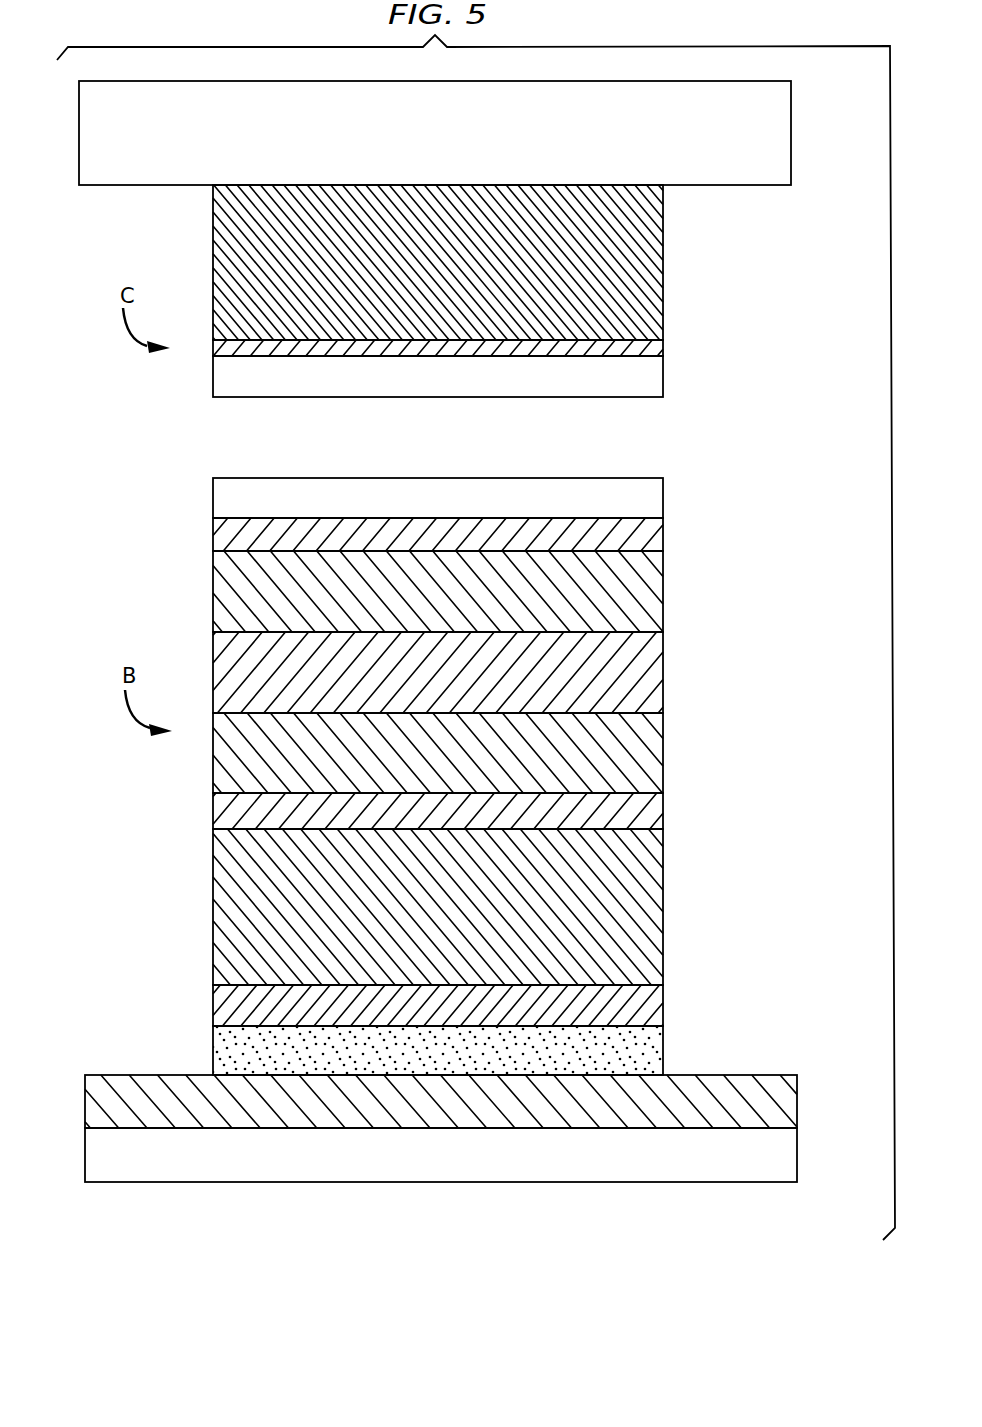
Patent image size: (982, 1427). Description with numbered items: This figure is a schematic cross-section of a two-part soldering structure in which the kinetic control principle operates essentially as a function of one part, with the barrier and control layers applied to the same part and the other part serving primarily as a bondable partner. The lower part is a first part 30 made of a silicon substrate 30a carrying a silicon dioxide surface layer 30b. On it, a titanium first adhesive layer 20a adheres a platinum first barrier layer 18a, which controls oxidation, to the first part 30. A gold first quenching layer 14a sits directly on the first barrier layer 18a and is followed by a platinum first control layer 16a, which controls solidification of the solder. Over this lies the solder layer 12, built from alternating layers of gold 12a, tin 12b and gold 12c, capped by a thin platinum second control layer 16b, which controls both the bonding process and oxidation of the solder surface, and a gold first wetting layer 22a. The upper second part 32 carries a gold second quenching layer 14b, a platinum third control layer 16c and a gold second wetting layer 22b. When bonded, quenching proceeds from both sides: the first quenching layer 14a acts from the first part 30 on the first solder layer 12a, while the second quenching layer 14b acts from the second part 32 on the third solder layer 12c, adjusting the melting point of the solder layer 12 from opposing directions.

The second part 32 is at (769, 163).
The second quenching layer 14b is at (650, 255).
The third control layer 16c is at (650, 350).
The second wetting layer 22b is at (650, 383).
The first wetting layer 22a is at (648, 495).
The second control layer 16b is at (650, 535).
The solder layer 12 is at (520, 671).
The third solder layer 12c is at (650, 582).
The second solder layer 12b is at (650, 657).
The first solder layer 12a is at (476, 753).
The first control layer 16a is at (650, 813).
The first quenching layer 14a is at (652, 900).
The first barrier layer 18a is at (652, 1013).
The first adhesive layer 20a is at (650, 1062).
The first part 30 is at (481, 1128).
The silicon dioxide surface layer 30b is at (777, 1087).
The silicon substrate 30a is at (777, 1167).